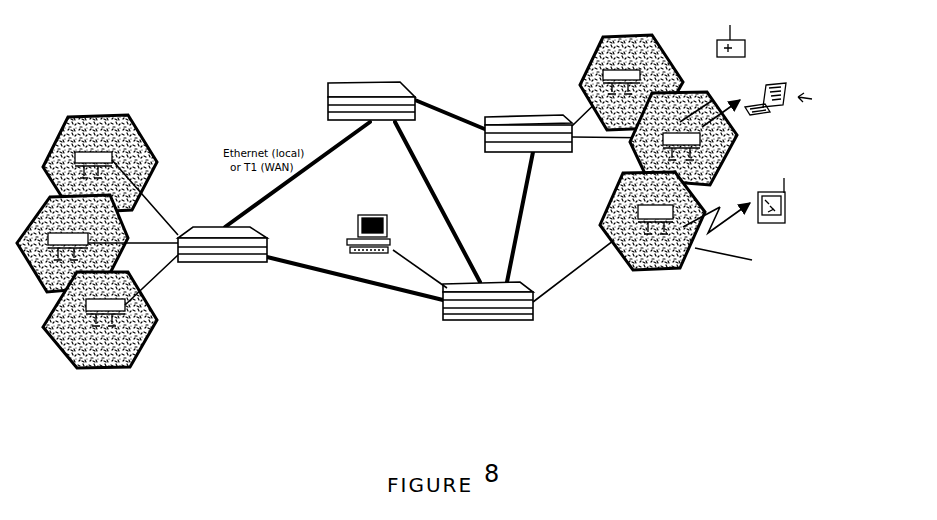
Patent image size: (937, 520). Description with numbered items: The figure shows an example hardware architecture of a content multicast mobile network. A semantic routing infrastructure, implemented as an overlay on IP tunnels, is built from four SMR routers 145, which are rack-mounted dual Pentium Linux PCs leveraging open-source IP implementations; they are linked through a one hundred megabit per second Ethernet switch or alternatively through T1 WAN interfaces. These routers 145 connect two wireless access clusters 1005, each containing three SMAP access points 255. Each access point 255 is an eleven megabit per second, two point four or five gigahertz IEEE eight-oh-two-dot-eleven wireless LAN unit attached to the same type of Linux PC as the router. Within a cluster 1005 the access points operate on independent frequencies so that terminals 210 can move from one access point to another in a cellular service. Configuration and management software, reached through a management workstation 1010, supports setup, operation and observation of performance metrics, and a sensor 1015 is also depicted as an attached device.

The SMR router 145 is at (420, 217).
The wireless access cluster 1005 is at (38, 344).
The management workstation 1010 is at (373, 258).
The sensor 1015 is at (794, 37).
The terminal 210 is at (806, 206).
The SMAP access point 255 is at (650, 236).